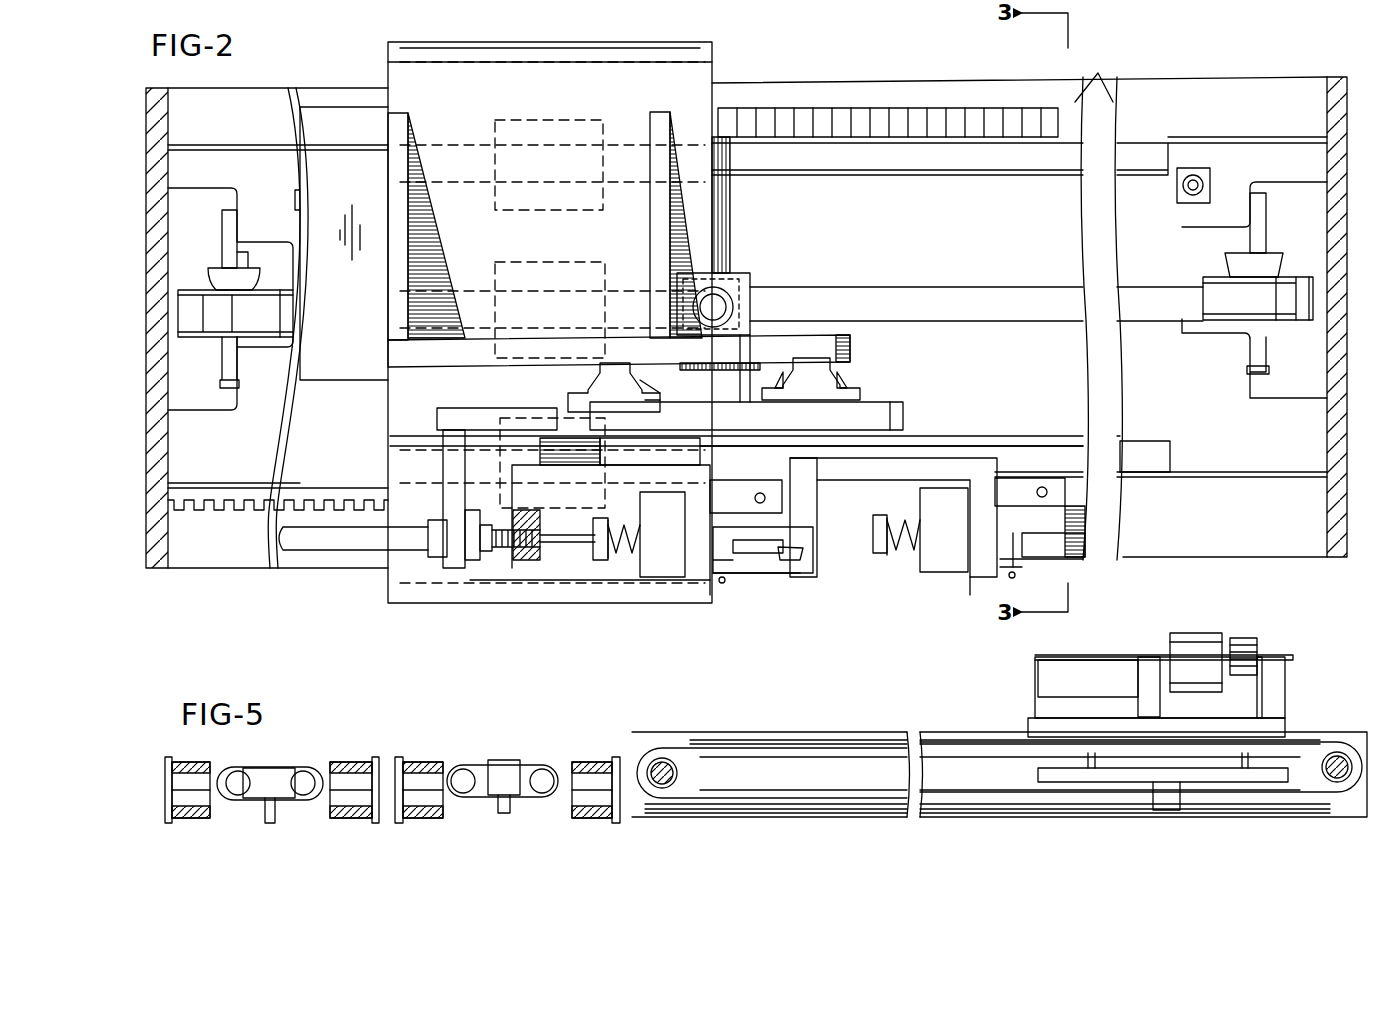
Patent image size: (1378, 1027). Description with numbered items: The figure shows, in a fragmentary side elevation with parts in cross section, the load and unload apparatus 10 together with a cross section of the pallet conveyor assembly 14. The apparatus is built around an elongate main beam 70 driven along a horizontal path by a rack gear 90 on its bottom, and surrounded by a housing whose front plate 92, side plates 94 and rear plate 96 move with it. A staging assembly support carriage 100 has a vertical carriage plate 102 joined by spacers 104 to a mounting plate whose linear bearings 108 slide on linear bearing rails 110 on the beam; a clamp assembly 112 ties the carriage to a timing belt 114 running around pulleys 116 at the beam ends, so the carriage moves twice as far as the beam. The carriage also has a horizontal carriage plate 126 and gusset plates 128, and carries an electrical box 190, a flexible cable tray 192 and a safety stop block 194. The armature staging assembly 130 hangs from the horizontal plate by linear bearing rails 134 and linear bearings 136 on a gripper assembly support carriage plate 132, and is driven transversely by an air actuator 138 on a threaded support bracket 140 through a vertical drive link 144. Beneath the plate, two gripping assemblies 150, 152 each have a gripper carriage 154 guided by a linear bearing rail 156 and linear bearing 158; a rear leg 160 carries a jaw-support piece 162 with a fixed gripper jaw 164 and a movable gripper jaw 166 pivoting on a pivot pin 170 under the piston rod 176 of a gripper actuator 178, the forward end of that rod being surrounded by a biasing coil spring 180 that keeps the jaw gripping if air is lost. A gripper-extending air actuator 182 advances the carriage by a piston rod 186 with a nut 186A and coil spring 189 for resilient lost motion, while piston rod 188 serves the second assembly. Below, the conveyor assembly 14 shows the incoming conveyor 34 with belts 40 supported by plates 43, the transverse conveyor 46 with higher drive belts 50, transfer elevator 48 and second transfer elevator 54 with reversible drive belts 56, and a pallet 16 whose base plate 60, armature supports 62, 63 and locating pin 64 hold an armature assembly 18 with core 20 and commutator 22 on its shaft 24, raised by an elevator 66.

In FIG. 2, the load and unload apparatus 10 is at (1163, 68).
In FIG. 2, the front plate 92 is at (165, 110).
In FIG. 2, the rear plate 96 is at (1333, 95).
In FIG. 2, the main beam 70 is at (228, 460).
In FIG. 2, the pulleys 116 is at (200, 345).
In FIG. 2, the electrical box 190 is at (310, 110).
In FIG. 2, the rack gear 90 is at (232, 510).
In FIG. 2, the staging assembly support carriage 100 is at (715, 45).
In FIG. 2, the spacers 104 is at (612, 50).
In FIG. 2, the vertical carriage plate 102 is at (705, 82).
In FIG. 2, the gusset plates 128 is at (400, 118).
In FIG. 2, the linear bearings 108 is at (540, 118).
In FIG. 2, the clamp assembly 112 is at (538, 262).
In FIG. 2, the flexible cable tray 192 is at (895, 108).
In FIG. 2, the linear bearing rails 110 is at (1115, 160).
In FIG. 2, the block 194 is at (1193, 168).
In FIG. 2, the side plates 94 is at (1098, 301).
In FIG. 2, the timing belt 114 is at (928, 288).
In FIG. 2, the air actuator 138 is at (722, 272).
In FIG. 2, the threaded support bracket 140 is at (748, 270).
In FIG. 2, the vertical drive link 144 is at (755, 282).
In FIG. 2, the horizontal carriage plate 126 is at (855, 350).
In FIG. 2, the linear bearing rails 134 is at (622, 375).
In FIG. 2, the linear bearings 136 is at (590, 378).
In FIG. 2, the gripper assembly support carriage plate 132 is at (895, 405).
In FIG. 2, the armature staging assembly 130 is at (920, 410).
In FIG. 2, the linear bearing rail 156 is at (898, 445).
In FIG. 2, the armature shaft-gripping assembly 150 is at (680, 590).
In FIG. 2, the linear bearing 158 is at (568, 448).
In FIG. 2, the gripper carriage 154 is at (645, 470).
In FIG. 2, the gripper jaw-support piece 162 is at (727, 482).
In FIG. 2, the piston rod 186 is at (482, 525).
In FIG. 2, the gripper-extending air actuator 182 is at (312, 552).
In FIG. 2, the nut 186A is at (485, 552).
In FIG. 2, the coil spring 189 is at (508, 560).
In FIG. 2, the piston rod 188 is at (575, 546).
In FIG. 2, the piston rod 176 is at (626, 525).
In FIG. 2, the gripper actuator 178 is at (648, 558).
In FIG. 2, the spring 180 is at (625, 558).
In FIG. 2, the fixed gripper jaw 164 is at (810, 560).
In FIG. 2, the movable gripper jaw 166 is at (795, 563).
In FIG. 2, the pivot pin 170 is at (728, 582).
In FIG. 2, the rear leg 160 is at (718, 590).
In FIG. 2, the armature shaft-gripping assembly 152 is at (940, 585).
In FIG. 5, the pallet conveyor assembly 14 is at (350, 752).
In FIG. 5, the pallet conveying endless belts 40 is at (420, 760).
In FIG. 5, the plates 43 is at (405, 758).
In FIG. 5, the second transfer elevator 54 is at (273, 760).
In FIG. 5, the reversible drive belts 56 is at (285, 778).
In FIG. 5, the incoming conveyor 34 is at (450, 748).
In FIG. 5, the transfer elevator device 48 is at (505, 758).
In FIG. 5, the pallet 16 is at (1300, 730).
In FIG. 5, the transverse conveyor 46 is at (940, 725).
In FIG. 5, the drive belts 50 is at (898, 740).
In FIG. 5, the base plate 60 is at (1028, 725).
In FIG. 5, the locating pin 64 is at (1035, 680).
In FIG. 5, the armature support 62 is at (1150, 655).
In FIG. 5, the armature assembly 18 is at (1190, 630).
In FIG. 5, the coil-receiving core 20 is at (1208, 633).
In FIG. 5, the commutator 22 is at (1246, 638).
In FIG. 5, the armature shaft 24 is at (1093, 657).
In FIG. 5, the armature support 63 is at (1285, 685).
In FIG. 5, the elevator 66 is at (1035, 775).